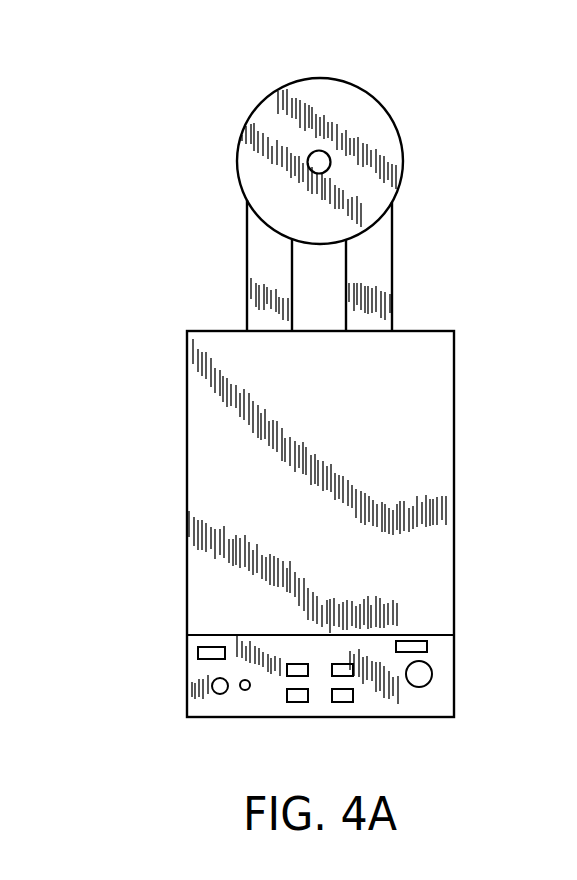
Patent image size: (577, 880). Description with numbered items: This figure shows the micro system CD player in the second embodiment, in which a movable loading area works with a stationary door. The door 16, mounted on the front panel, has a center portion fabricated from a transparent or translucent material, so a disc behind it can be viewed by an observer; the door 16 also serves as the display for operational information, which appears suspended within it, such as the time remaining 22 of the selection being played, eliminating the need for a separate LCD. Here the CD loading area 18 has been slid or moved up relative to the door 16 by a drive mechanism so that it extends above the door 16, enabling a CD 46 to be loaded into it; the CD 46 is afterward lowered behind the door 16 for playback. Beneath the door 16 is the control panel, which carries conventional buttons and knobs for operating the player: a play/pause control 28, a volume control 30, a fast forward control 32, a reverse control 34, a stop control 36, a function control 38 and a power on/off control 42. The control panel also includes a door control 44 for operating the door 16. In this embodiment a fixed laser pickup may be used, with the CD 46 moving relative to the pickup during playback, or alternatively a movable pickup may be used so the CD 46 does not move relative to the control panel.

The door 16 is at (435, 380).
The CD loading area 18 is at (372, 278).
The time remaining 22 is at (240, 692).
The play/pause control 28 is at (293, 662).
The volume control 30 is at (418, 672).
The fast forward control 32 is at (340, 698).
The reverse control 34 is at (298, 698).
The stop control 36 is at (353, 675).
The function control 38 is at (212, 687).
The power on/off control 42 is at (198, 652).
The door control 44 is at (427, 645).
The CD 46 is at (382, 152).